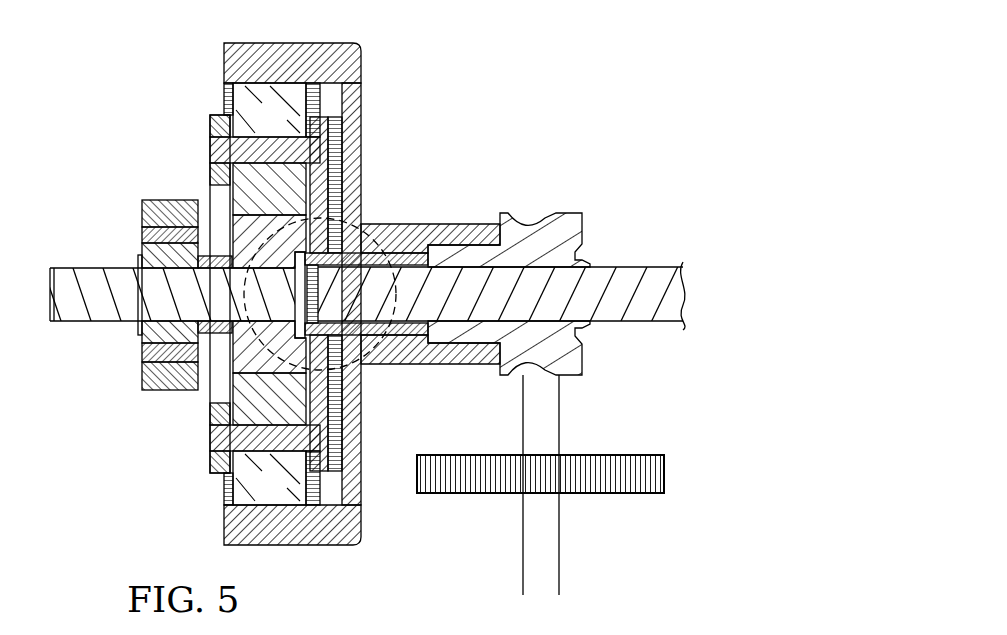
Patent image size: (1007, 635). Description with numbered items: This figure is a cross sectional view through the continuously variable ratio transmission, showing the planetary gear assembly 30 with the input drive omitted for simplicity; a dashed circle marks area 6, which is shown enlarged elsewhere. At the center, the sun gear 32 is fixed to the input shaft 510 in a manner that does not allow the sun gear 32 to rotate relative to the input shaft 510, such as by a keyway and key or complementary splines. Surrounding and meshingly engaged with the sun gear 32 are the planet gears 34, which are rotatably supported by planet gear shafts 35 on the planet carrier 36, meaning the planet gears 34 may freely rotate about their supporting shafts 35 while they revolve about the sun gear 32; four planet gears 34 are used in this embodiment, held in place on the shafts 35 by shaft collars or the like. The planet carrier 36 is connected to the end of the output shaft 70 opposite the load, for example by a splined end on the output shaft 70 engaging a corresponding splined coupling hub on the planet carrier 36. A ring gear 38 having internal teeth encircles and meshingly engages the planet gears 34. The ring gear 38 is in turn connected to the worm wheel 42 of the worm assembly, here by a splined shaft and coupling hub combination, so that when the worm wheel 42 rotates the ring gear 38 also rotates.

The planetary gear assembly 30 is at (150, 98).
The sun gear 32 is at (232, 218).
The planet gears 34 is at (283, 118).
The planet gear shafts 35 is at (211, 151).
The planet carrier 36 is at (361, 108).
The ring gear 38 is at (376, 222).
The worm wheel 42 is at (578, 213).
The output shaft 70 is at (614, 270).
The input shaft 510 is at (90, 313).
The area 6 is at (236, 244).